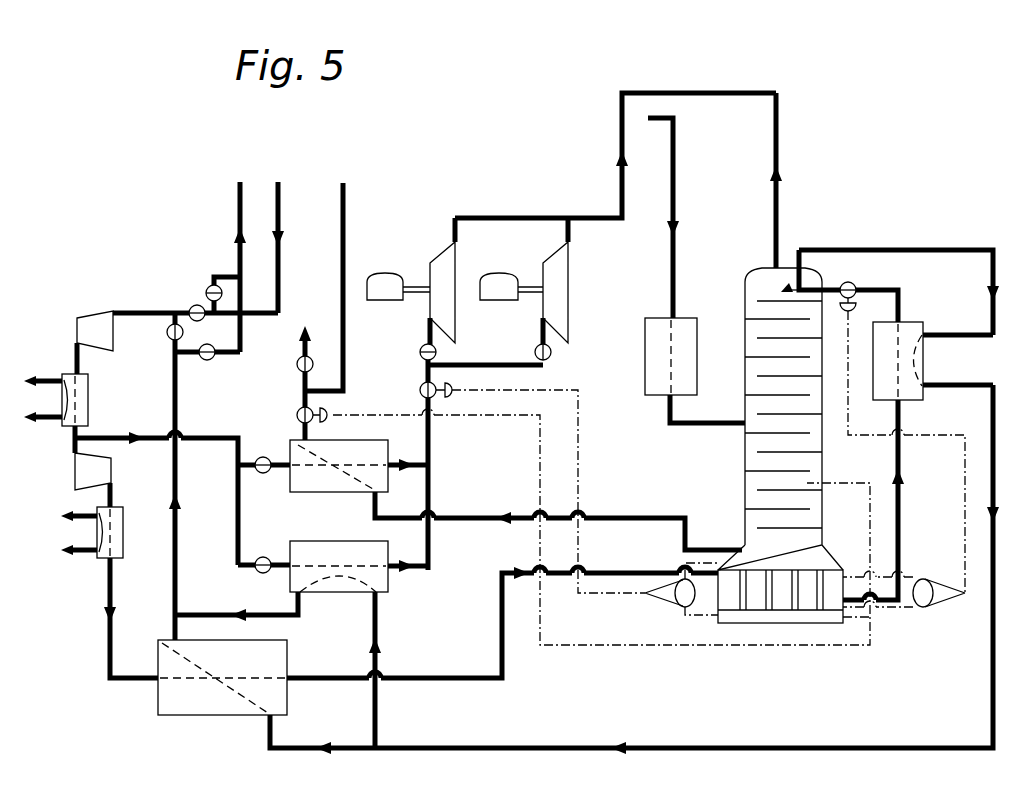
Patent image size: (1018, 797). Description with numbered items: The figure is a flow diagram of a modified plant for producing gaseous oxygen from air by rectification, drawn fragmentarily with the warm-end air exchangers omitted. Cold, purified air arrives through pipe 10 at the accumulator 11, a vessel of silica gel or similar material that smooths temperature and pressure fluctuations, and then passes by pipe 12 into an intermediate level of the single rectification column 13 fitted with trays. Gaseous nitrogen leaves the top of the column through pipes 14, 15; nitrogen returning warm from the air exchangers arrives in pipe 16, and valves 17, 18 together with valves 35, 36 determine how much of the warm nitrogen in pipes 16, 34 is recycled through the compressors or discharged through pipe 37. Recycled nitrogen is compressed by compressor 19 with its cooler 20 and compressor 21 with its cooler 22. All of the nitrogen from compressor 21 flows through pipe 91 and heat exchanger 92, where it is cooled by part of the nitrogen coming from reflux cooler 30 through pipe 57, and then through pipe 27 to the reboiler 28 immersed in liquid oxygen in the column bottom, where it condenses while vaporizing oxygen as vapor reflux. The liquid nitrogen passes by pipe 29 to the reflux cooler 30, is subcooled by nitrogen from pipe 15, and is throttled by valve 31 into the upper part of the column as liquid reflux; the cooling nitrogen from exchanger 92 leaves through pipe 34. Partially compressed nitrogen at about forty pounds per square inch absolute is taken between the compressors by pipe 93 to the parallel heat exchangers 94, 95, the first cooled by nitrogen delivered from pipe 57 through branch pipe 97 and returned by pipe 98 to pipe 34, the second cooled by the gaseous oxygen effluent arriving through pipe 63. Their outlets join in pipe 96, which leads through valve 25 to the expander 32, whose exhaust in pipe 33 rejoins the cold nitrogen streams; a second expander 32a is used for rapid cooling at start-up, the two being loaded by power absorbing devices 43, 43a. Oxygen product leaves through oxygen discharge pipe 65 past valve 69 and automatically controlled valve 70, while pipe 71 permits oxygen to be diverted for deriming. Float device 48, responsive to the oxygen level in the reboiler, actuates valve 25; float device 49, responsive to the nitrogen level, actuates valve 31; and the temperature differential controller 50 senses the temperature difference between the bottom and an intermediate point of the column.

The pipe 10 is at (676, 176).
The accumulator 11 is at (645, 346).
The pipe 12 is at (665, 410).
The rectification column 13 is at (745, 462).
The pipe 14 is at (779, 137).
The pipe 15 is at (906, 250).
The pipe 16 is at (281, 202).
The valve 17 is at (207, 290).
The valve 18 is at (201, 320).
The compressor 19 is at (88, 322).
The cooler 20 is at (90, 403).
The compressor 21 is at (80, 470).
The cooler 22 is at (125, 532).
The valve 25 is at (424, 388).
The pipe 27 is at (500, 603).
The reboiler 28 is at (786, 586).
The pipe 29 is at (901, 516).
The reflux cooler 30 is at (876, 396).
The valve 31 is at (858, 287).
The expander 32 is at (569, 326).
The expander 32a is at (456, 326).
The pipe 33 is at (620, 194).
The pipe 34 is at (178, 392).
The valve 35 is at (168, 334).
The valve 36 is at (215, 358).
The pipe 37 is at (240, 206).
The power absorbing device 43 is at (505, 283).
The power absorbing device 43a is at (390, 296).
The float device 48 is at (668, 601).
The float device 49 is at (940, 604).
The temperature differential controller 50 is at (830, 483).
The pipe 57 is at (688, 745).
The pipe 63 is at (616, 515).
The oxygen discharge pipe 65 is at (303, 347).
The valve 69 is at (298, 362).
The valve 70 is at (296, 415).
The pipe 71 is at (343, 254).
The pipe 91 is at (125, 680).
The heat exchanger 92 is at (198, 713).
The pipe 93 is at (212, 441).
The heat exchanger 94 is at (335, 592).
The heat exchanger 95 is at (350, 448).
The pipe 96 is at (432, 448).
The branch pipe 97 is at (378, 631).
The pipe 98 is at (190, 613).